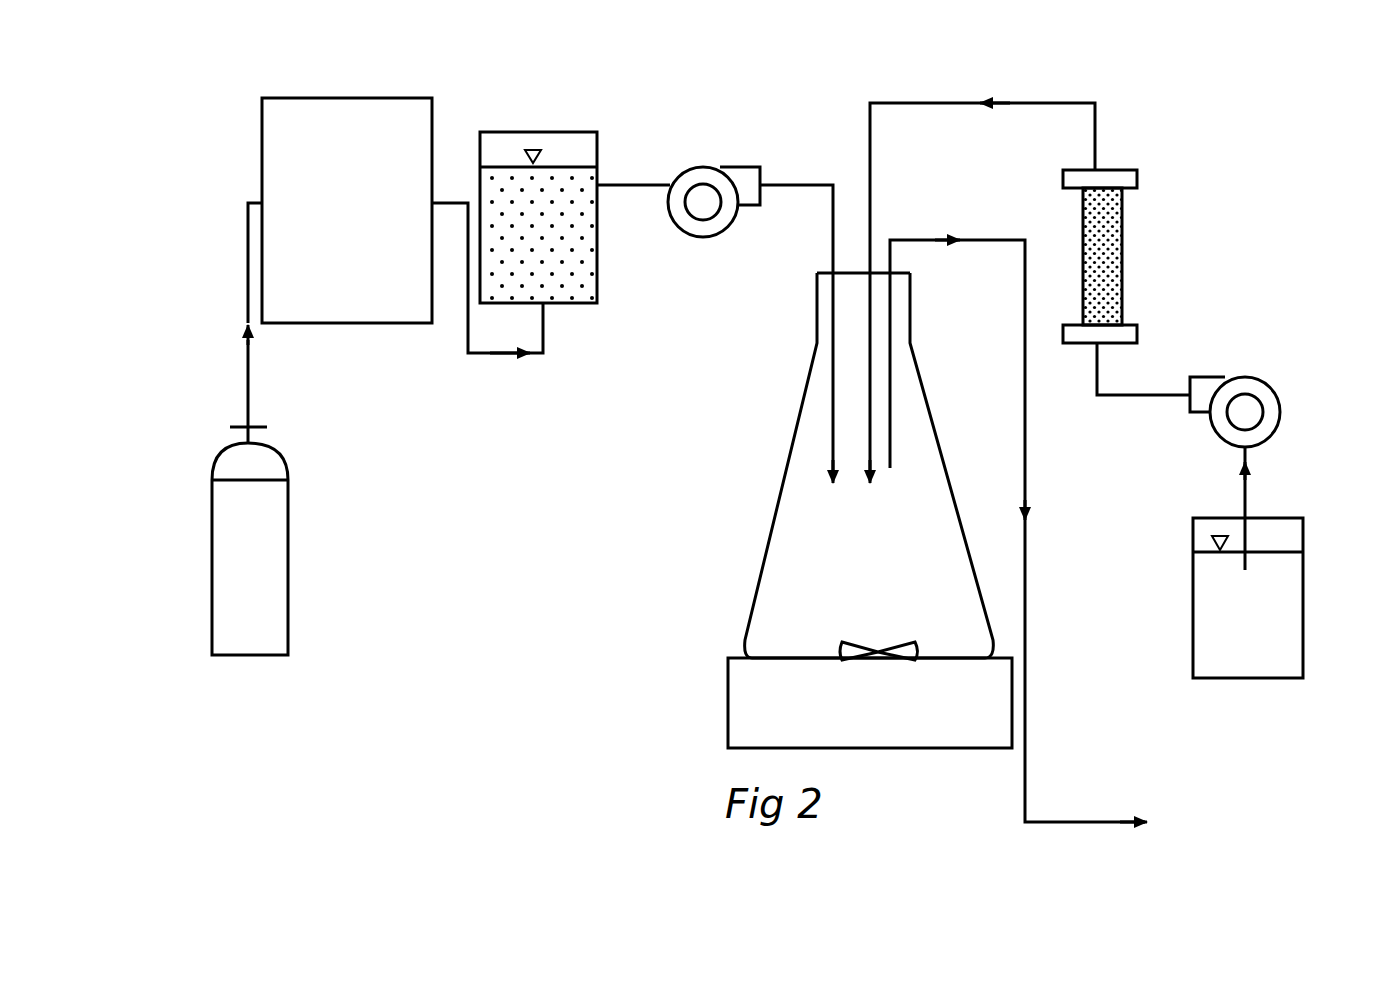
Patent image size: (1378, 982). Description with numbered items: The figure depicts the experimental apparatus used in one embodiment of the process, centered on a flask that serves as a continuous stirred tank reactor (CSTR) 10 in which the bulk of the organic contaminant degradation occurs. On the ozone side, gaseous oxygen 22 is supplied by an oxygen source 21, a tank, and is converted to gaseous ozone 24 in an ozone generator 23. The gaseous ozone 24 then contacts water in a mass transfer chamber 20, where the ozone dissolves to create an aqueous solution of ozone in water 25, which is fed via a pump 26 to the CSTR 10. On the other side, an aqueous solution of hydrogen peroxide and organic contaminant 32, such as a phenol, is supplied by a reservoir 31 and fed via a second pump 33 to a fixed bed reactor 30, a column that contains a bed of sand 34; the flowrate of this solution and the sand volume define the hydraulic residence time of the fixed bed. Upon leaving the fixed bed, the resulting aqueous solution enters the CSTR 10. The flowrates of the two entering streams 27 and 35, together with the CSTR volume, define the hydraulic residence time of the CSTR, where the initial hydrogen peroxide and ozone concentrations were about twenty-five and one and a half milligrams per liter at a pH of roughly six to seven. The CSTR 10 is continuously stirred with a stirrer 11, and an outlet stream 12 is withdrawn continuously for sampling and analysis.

The continuous stirred tank reactor 10 is at (770, 532).
The stirrer 11 is at (726, 720).
The outlet stream 12 is at (1030, 620).
The mass transfer chamber 20 is at (575, 130).
The oxygen source 21 is at (292, 620).
The gaseous oxygen 22 is at (243, 377).
The ozone generator 23 is at (358, 94).
The gaseous ozone 24 is at (462, 358).
The aqueous solution of ozone in water 25 is at (626, 190).
The pump 26 is at (710, 166).
The entering stream 27 is at (830, 215).
The fixed bed reactor 30 is at (1150, 256).
The reservoir 31 is at (1306, 640).
The aqueous solution of hydrogen peroxide and organic contaminant 32 is at (1252, 500).
The pump 33 is at (1272, 380).
The bed of sand 34 is at (1103, 256).
The entering stream 35 is at (1002, 100).